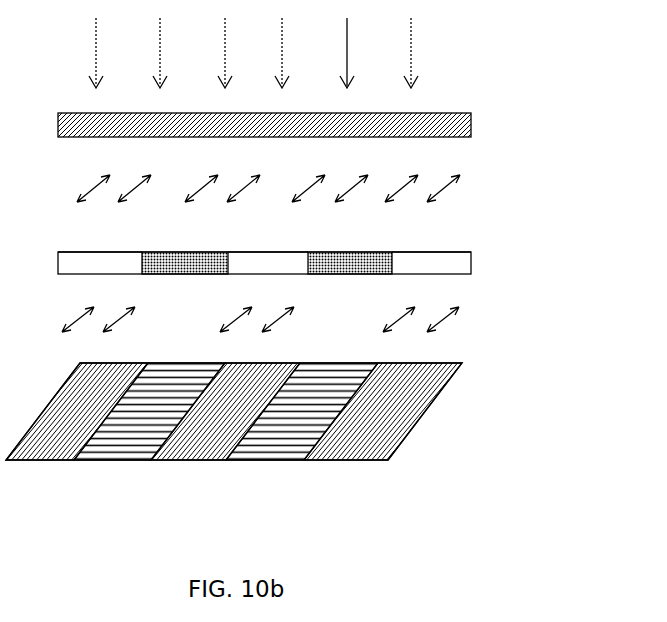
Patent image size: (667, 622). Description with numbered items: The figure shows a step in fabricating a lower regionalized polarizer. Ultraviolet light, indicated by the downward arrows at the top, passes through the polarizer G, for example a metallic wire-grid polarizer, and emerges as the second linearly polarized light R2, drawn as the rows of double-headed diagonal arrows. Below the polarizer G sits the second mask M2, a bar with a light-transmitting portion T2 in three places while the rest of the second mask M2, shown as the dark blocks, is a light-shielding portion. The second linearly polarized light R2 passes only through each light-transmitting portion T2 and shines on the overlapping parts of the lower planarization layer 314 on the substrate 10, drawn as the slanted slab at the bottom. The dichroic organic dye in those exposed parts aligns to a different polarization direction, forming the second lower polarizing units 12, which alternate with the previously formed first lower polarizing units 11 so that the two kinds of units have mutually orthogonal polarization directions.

The polarizer G is at (448, 132).
The second linearly polarized light R2 is at (459, 190).
The second mask M2 is at (310, 248).
The light-transmitting portion T2 is at (264, 237).
The alignment layer substrate 10 is at (324, 453).
The lower planarization layer 314 is at (324, 453).
The first lower polarizing units 11 is at (307, 402).
The second lower polarizing units 12 is at (343, 423).